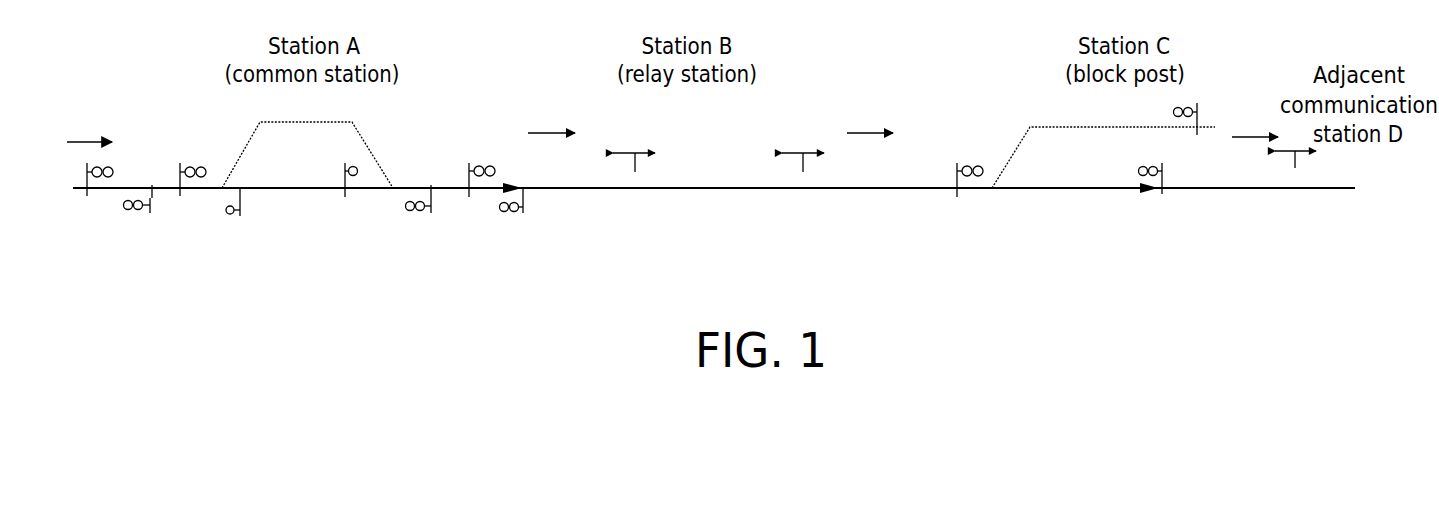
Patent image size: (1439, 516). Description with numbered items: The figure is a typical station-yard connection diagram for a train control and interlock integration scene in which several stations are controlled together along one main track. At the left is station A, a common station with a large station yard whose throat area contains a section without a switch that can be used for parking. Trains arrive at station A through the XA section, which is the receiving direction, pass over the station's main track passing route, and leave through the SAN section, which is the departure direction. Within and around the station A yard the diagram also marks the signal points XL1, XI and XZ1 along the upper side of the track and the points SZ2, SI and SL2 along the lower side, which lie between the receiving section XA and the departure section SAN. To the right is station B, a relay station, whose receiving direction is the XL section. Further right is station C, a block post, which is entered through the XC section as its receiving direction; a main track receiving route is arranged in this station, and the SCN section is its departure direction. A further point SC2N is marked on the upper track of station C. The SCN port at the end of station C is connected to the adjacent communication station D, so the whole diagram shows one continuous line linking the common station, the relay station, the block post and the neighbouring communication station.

The XA section XA is at (90, 169).
The signal XL1 is at (182, 167).
The signal XI is at (345, 168).
The signal XZ1 is at (471, 166).
The signal SZ2 is at (147, 220).
The signal SI is at (237, 220).
The signal SL2 is at (429, 215).
The SAN section SAN is at (524, 216).
The XL section XL is at (716, 158).
The XC section XC is at (961, 166).
The SCN section SCN is at (1177, 175).
The signal SC2N is at (1220, 118).